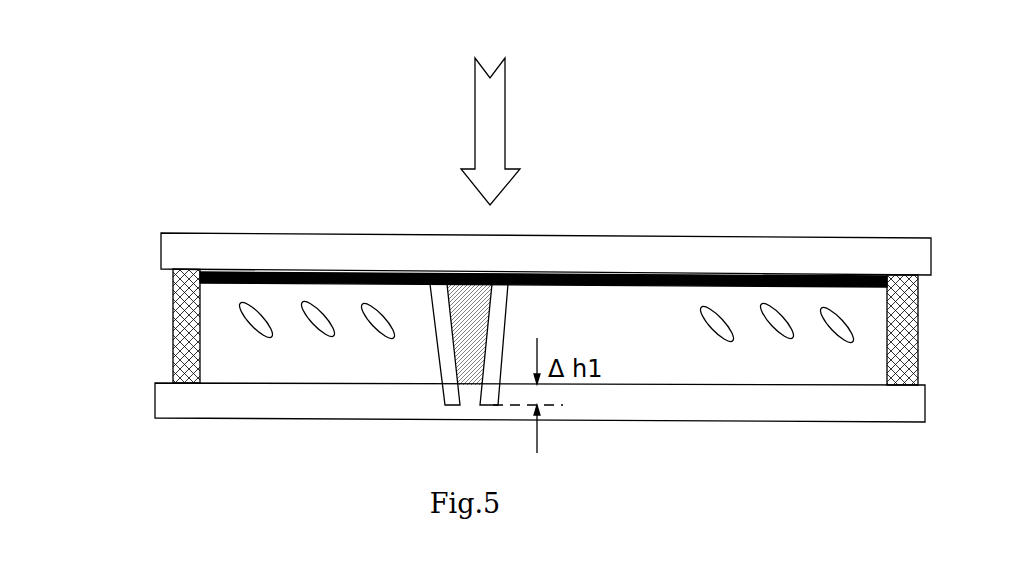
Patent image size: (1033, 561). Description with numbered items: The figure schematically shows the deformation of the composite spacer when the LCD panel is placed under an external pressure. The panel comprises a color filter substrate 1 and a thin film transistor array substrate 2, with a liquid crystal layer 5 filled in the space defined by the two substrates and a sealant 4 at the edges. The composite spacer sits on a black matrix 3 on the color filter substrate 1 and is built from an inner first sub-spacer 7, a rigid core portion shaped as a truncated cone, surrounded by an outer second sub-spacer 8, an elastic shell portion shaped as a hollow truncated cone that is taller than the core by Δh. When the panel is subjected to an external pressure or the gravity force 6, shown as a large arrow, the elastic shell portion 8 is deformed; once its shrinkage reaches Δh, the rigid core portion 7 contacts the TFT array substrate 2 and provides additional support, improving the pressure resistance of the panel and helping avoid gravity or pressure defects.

The color filter substrate 1 is at (491, 198).
The thin film transistor array substrate 2 is at (488, 368).
The black matrix 3 is at (543, 205).
The sealant 4 is at (485, 303).
The liquid crystal layer 5 is at (565, 237).
The gravity force 6 is at (452, 112).
The first sub-spacer 7 is at (412, 253).
The second sub-spacer 8 is at (539, 265).